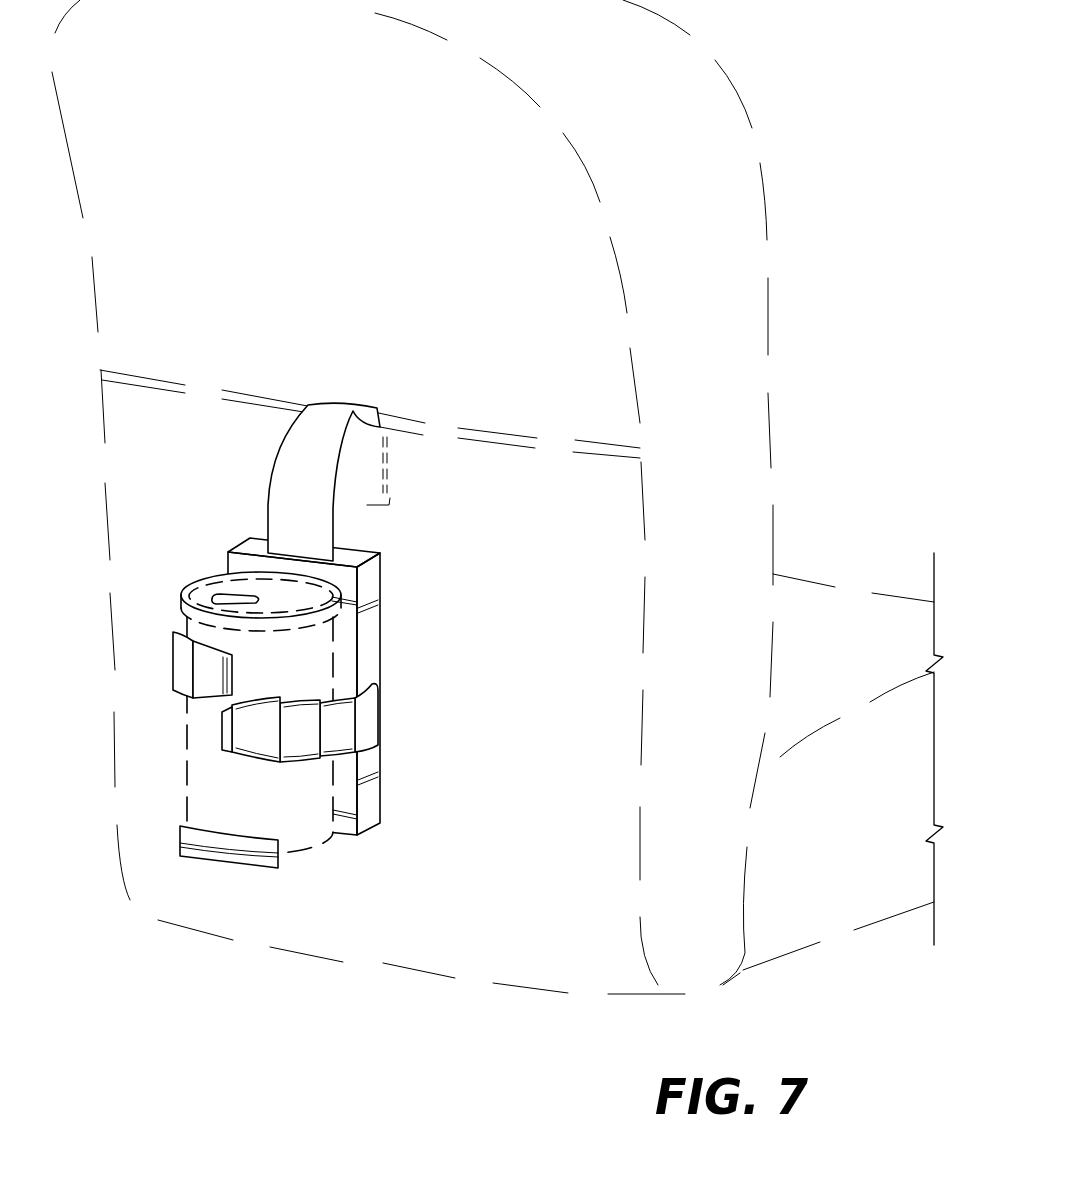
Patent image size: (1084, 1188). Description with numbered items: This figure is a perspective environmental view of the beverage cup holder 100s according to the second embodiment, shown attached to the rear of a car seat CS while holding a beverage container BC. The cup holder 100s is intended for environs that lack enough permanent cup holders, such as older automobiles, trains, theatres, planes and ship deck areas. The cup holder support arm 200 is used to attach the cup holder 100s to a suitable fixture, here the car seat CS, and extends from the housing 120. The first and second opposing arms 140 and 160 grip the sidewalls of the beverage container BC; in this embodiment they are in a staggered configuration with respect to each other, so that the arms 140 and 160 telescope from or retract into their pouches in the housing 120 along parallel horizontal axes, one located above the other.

The beverage cup holder 100s is at (344, 791).
The housing 120 is at (380, 770).
The first opposing arm 140 is at (185, 665).
The second opposing arm 160 is at (385, 723).
The cup holder support arm 200 is at (320, 403).
The car seat CS is at (767, 212).
The beverage container BC is at (307, 670).